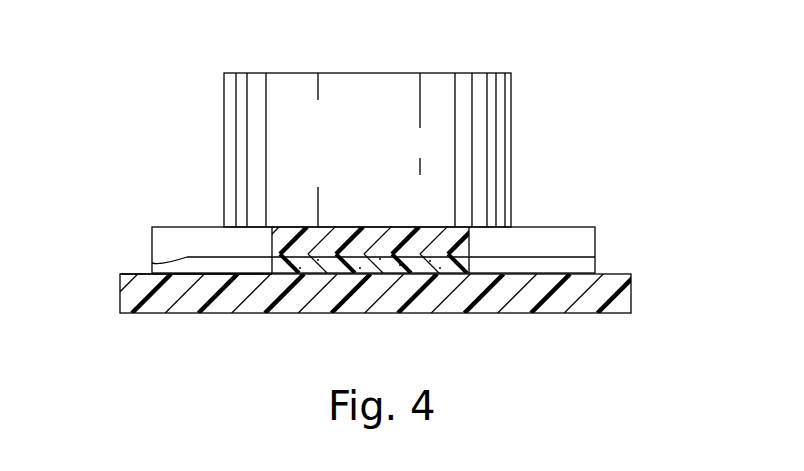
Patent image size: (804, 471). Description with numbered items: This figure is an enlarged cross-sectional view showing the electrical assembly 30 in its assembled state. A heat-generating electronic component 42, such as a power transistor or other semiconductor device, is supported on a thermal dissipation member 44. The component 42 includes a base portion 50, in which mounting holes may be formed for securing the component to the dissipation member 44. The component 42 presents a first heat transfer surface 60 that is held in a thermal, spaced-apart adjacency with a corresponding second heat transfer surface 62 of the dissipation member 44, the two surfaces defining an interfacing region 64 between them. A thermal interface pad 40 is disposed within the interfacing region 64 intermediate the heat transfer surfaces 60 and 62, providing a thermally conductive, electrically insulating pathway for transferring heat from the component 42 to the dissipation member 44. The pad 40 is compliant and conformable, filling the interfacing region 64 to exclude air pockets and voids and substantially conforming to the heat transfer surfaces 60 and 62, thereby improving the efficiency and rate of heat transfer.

The electrical assembly 30 is at (629, 64).
The heat-generating electronic component 42 is at (511, 115).
The base portion 50 is at (595, 228).
The thermal interface pad 40 is at (472, 265).
The interfacing region 64 is at (500, 262).
The first heat transfer surface 60 is at (152, 263).
The second heat transfer surface 62 is at (158, 274).
The thermal dissipation member 44 is at (631, 287).